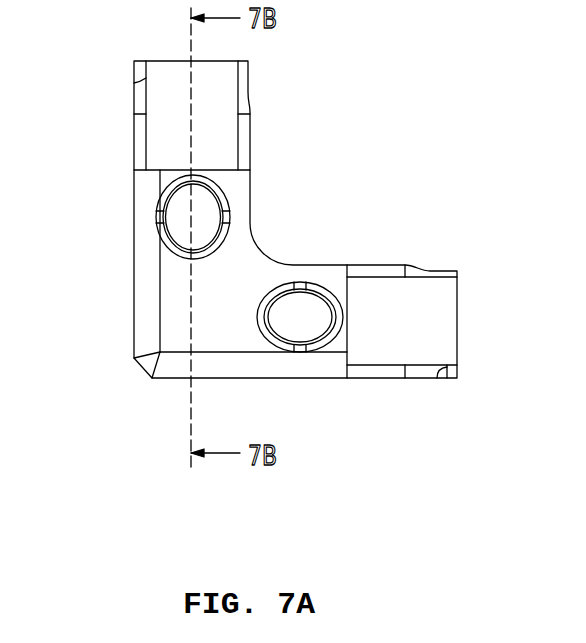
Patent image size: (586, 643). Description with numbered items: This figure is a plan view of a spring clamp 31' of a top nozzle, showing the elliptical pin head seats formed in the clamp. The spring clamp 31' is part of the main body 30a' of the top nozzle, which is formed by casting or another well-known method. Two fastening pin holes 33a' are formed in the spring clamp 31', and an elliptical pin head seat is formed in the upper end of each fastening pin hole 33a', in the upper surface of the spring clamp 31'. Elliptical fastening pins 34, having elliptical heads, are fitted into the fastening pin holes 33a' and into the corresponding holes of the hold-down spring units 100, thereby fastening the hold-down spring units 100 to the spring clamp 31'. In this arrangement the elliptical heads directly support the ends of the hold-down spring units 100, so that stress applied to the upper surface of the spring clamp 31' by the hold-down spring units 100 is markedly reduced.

The spring clamp 31' is at (115, 267).
The main body 30a' is at (141, 402).
The hold-down spring unit 100 is at (163, 118).
The fastening pin hole 33a' is at (195, 305).
The elliptical fastening pin 34 is at (300, 305).